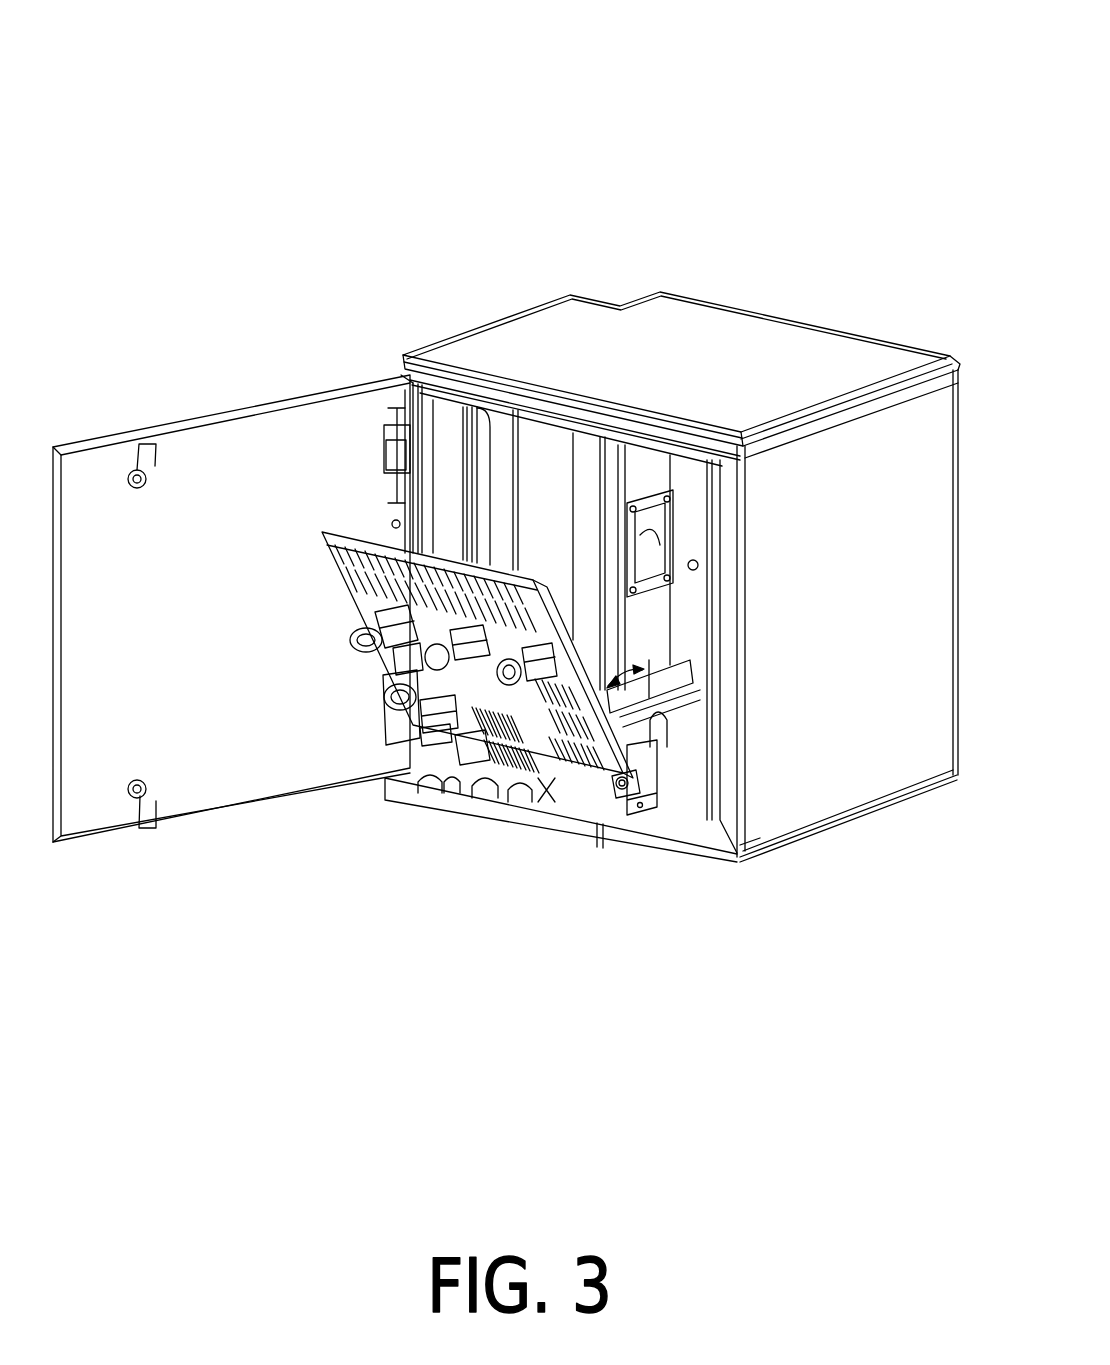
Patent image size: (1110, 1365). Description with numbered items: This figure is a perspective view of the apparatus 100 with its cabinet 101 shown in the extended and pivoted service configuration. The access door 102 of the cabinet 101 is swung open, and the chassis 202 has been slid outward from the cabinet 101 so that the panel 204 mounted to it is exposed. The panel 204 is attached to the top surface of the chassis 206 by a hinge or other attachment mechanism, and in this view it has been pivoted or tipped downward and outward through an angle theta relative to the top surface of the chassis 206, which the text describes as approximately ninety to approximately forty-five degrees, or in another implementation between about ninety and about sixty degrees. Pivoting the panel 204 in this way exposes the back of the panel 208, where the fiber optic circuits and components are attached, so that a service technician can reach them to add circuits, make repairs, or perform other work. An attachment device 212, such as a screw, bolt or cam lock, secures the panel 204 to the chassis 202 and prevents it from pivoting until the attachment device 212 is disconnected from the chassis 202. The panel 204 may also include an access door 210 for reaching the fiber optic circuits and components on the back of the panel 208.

The apparatus 100 is at (757, 93).
The cabinet 101 is at (730, 305).
The access door 102 is at (219, 655).
The chassis 202 is at (607, 835).
The panel 204 is at (378, 543).
The top surface of the chassis 206 is at (590, 813).
The back of the panel 208 is at (560, 602).
The access door 210 is at (600, 790).
The attachment device 212 is at (627, 783).